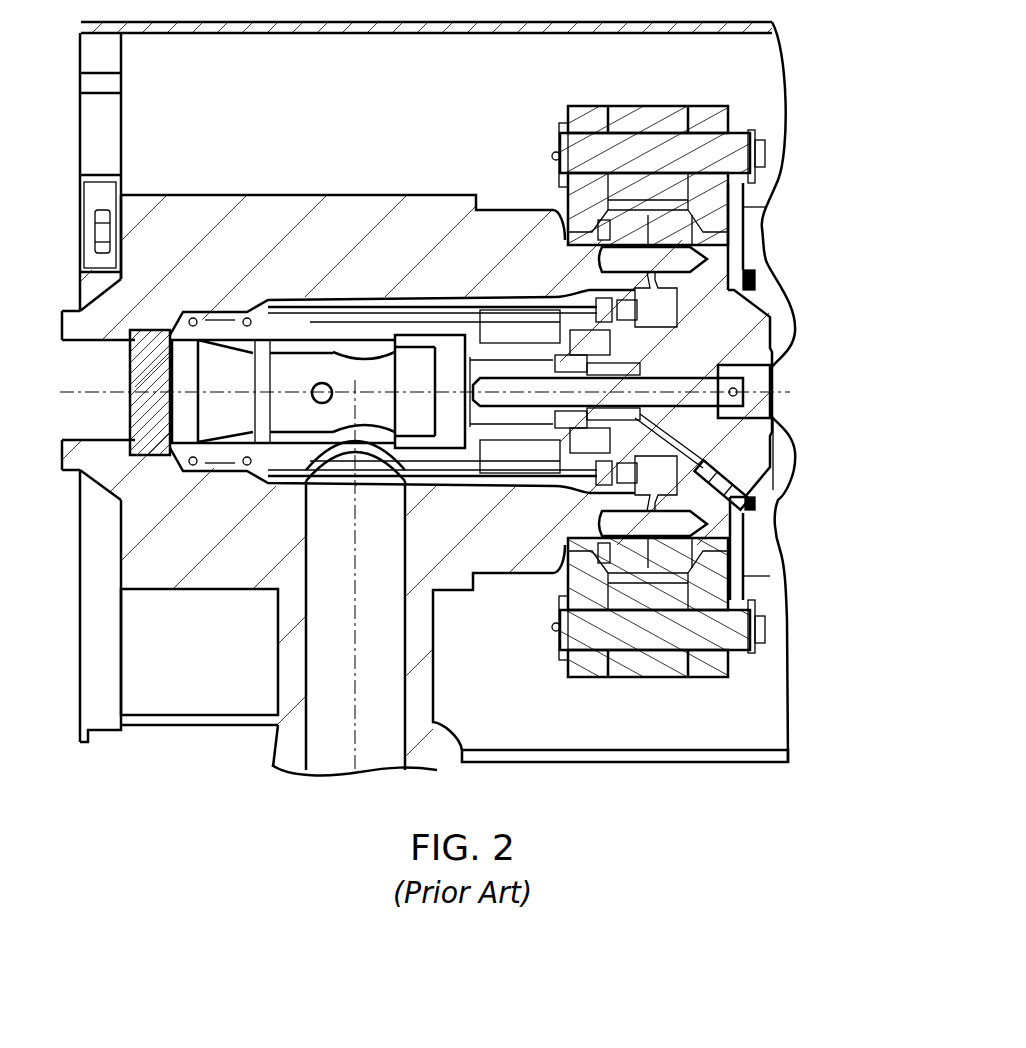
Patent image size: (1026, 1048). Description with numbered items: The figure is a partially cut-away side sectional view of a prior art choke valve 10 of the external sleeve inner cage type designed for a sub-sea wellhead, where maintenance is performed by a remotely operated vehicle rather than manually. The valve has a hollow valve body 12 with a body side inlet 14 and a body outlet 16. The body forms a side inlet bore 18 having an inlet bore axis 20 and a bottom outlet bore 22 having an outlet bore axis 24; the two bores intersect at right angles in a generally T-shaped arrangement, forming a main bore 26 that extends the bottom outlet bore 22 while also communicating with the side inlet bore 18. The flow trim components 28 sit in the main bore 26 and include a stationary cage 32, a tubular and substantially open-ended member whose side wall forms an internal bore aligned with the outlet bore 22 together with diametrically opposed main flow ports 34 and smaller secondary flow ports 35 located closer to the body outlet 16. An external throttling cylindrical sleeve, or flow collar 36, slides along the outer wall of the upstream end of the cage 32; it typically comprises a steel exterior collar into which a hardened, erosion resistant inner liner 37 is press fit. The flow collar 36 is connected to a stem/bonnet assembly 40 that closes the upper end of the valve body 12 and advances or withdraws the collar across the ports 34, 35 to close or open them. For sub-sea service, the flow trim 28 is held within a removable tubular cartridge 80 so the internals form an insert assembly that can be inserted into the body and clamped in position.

The choke valve 10 is at (798, 527).
The hollow valve body 12 is at (266, 198).
The body side inlet 14 is at (398, 713).
The body outlet 16 is at (62, 432).
The side inlet bore 18 is at (307, 600).
The inlet bore axis 20 is at (355, 672).
The bottom outlet bore 22 is at (105, 433).
The outlet bore axis 24 is at (93, 390).
The main bore 26 is at (345, 302).
The flow trim components 28 is at (333, 478).
The stationary cage component 32 is at (325, 318).
The main flow ports 34 is at (390, 382).
The secondary flow ports 35 is at (326, 384).
The external throttling cylindrical sleeve 36 is at (428, 333).
The inner liner 37 is at (433, 343).
The stem/bonnet assembly 40 is at (772, 352).
The removable tubular cartridge 80 is at (398, 316).